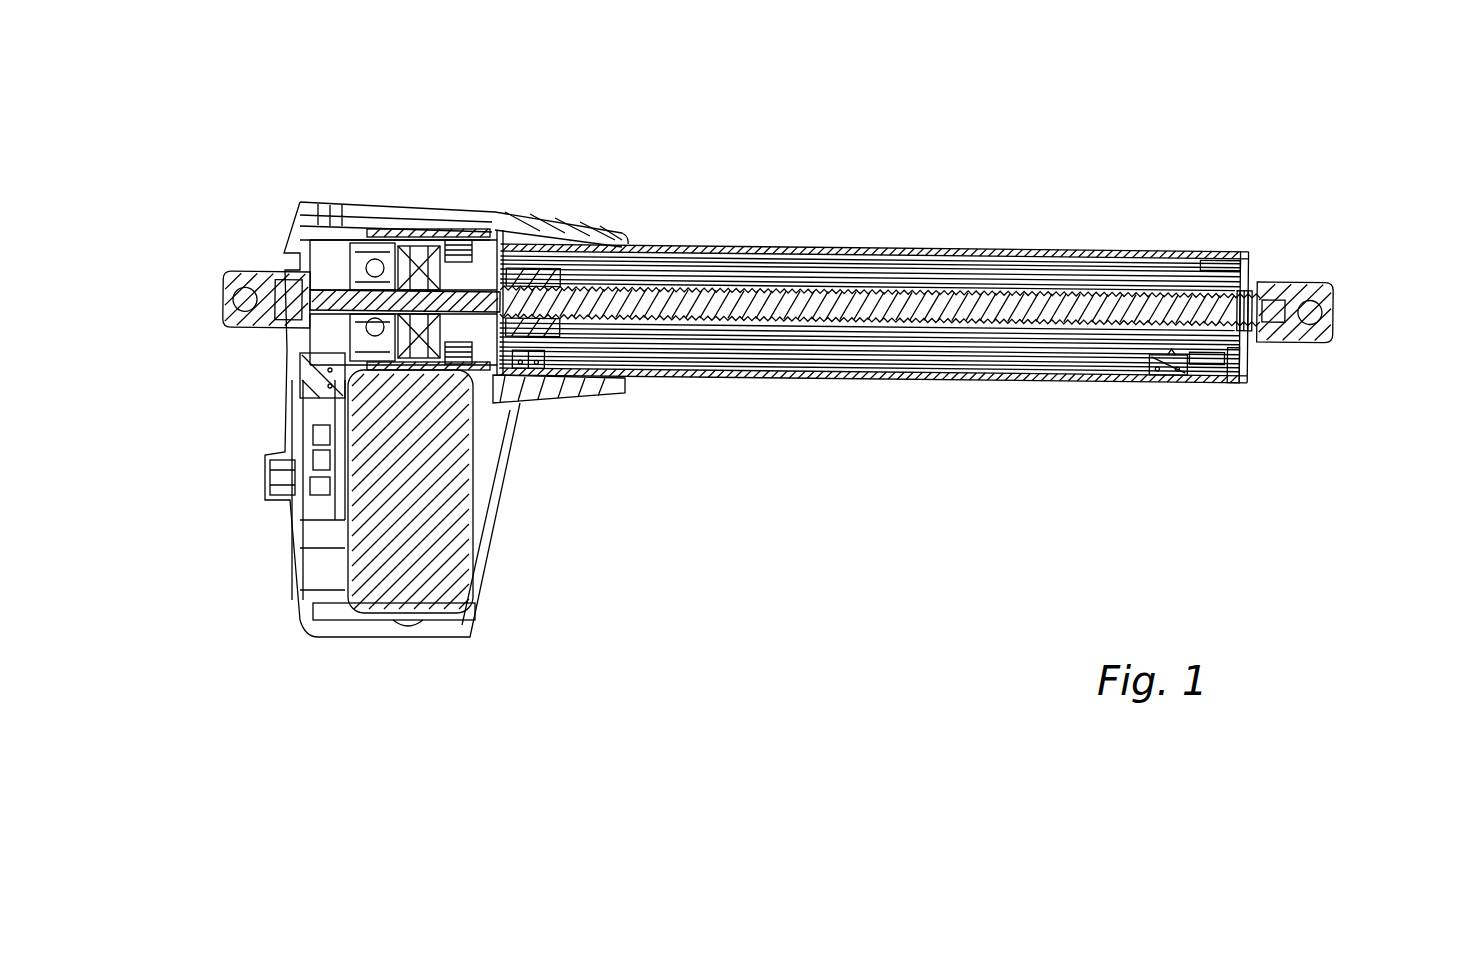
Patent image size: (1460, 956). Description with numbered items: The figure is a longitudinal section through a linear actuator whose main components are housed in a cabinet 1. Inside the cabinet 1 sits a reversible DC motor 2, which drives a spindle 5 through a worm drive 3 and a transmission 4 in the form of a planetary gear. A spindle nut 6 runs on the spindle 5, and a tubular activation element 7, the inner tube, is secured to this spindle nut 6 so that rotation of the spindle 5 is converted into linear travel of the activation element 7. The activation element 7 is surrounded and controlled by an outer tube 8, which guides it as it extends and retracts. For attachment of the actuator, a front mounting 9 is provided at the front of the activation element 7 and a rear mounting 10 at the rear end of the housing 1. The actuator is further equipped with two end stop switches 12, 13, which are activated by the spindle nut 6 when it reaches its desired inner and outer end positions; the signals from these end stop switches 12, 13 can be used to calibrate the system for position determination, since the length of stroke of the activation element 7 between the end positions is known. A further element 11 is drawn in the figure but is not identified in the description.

The cabinet 1 is at (508, 210).
The reversible DC motor 2 is at (440, 565).
The worm drive 3 is at (410, 255).
The transmission 4 is at (528, 400).
The spindle 5 is at (1125, 308).
The spindle nut 6 is at (582, 282).
The tubular activation element 7 is at (1077, 280).
The outer tube 8 is at (1222, 390).
The front mounting 9 is at (1313, 280).
The rear mounting 10 is at (243, 267).
The bearing sleeve 11 is at (417, 233).
The end stop switch 12 is at (555, 365).
The end stop switch 13 is at (1165, 368).